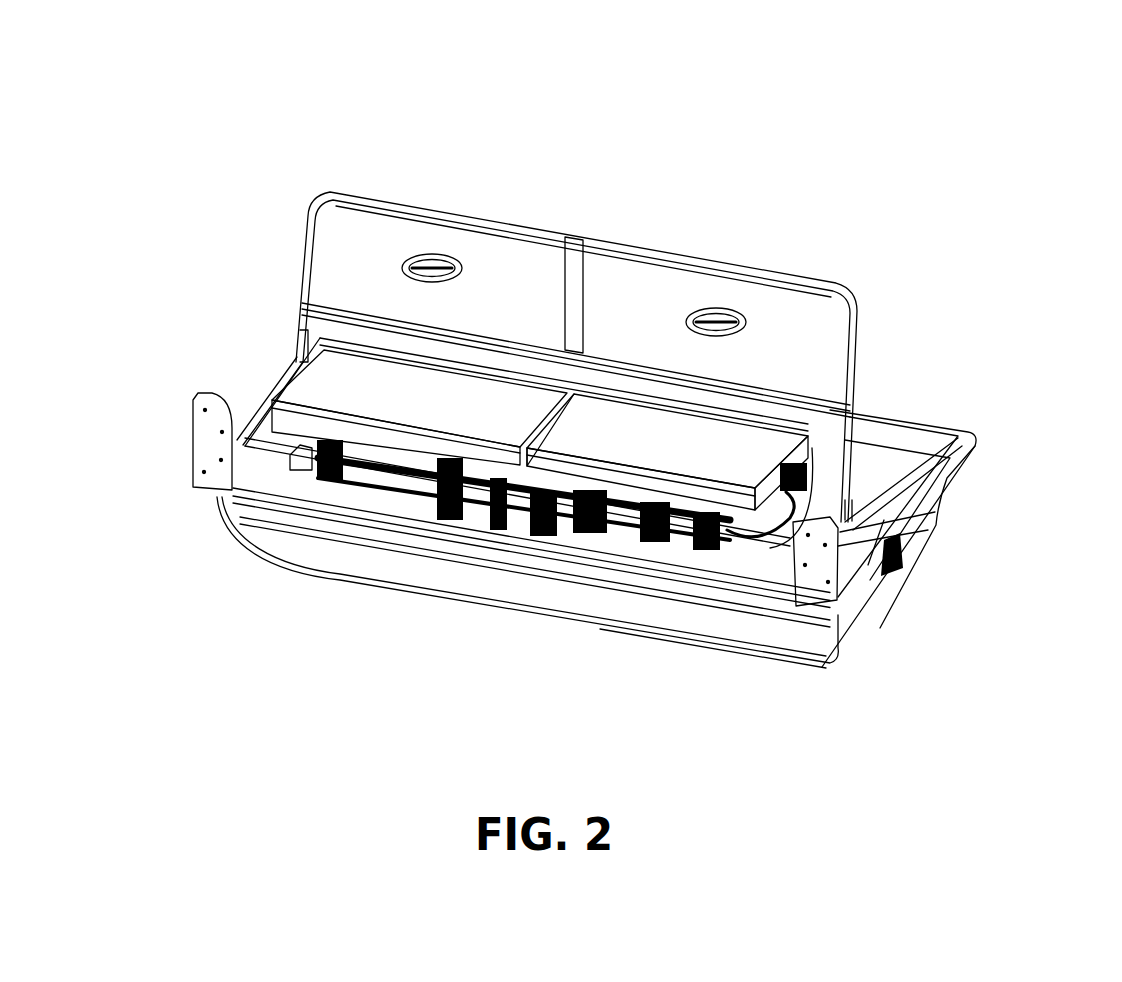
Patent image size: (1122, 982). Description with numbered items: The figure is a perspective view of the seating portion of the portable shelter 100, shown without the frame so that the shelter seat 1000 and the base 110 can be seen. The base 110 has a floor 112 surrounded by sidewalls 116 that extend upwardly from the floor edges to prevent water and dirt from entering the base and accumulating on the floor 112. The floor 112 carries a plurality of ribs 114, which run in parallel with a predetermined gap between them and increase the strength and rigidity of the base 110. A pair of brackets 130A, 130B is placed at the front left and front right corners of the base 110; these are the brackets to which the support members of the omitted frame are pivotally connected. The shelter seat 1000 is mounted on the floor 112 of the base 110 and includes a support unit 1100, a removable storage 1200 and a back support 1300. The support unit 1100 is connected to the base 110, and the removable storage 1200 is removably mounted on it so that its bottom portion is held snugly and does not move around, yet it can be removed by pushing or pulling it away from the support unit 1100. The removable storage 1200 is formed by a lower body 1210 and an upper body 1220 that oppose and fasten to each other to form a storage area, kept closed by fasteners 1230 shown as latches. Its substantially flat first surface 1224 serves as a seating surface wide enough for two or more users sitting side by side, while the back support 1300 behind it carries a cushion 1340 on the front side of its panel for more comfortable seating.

The portable shelter 100 is at (109, 80).
The shelter seat 1000 is at (312, 194).
The back support 1300 is at (852, 288).
The cushion 1340 is at (613, 290).
The base 110 is at (822, 665).
The floor 112 is at (877, 512).
The ribs 114 is at (883, 527).
The sidewalls 116 is at (852, 618).
The bracket 130A is at (848, 592).
The bracket 130B is at (207, 440).
The support unit 1100 is at (318, 487).
The removable storage 1200 is at (805, 470).
The lower body 1210 is at (380, 468).
The upper body 1220 is at (670, 483).
The first surface 1224 is at (323, 380).
The fasteners 1230 is at (415, 480).